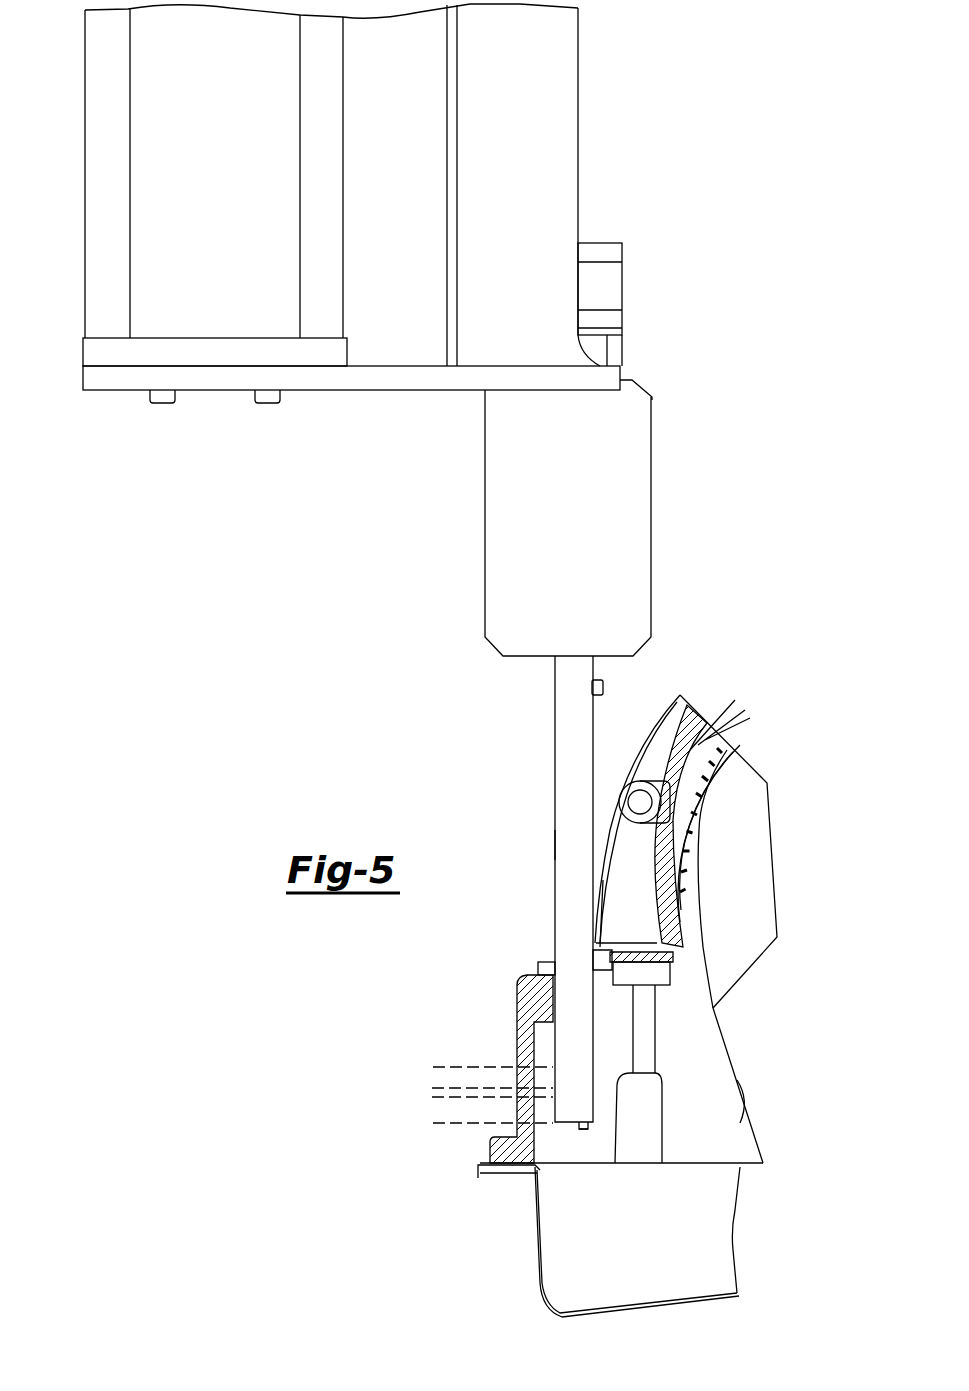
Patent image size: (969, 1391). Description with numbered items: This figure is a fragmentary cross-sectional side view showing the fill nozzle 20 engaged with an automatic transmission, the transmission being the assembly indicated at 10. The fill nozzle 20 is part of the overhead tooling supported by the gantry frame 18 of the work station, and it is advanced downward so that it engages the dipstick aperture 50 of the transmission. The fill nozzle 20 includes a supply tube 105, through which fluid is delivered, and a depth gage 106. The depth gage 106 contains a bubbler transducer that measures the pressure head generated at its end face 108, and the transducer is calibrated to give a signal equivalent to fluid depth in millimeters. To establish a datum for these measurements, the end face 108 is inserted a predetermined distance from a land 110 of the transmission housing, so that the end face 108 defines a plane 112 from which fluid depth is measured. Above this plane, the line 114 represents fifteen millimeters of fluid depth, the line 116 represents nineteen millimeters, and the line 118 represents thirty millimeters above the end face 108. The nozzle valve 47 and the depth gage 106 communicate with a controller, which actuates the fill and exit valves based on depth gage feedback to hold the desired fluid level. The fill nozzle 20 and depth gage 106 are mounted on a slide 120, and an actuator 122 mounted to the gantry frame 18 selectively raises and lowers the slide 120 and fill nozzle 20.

The cylinder head 10 is at (741, 725).
The gantry frame 18 is at (589, 250).
The fill nozzle 20 is at (692, 534).
The nozzle valve 47 is at (556, 845).
The dipstick aperture 50 is at (607, 947).
The supply tube 105 is at (583, 1130).
The depth gage 106 is at (557, 728).
The end face 108 is at (570, 1130).
The land 110 is at (547, 961).
The plane 112 is at (440, 1123).
The line 114 is at (433, 1097).
The line 116 is at (433, 1088).
The line 118 is at (442, 1067).
The slide 120 is at (613, 355).
The actuator 122 is at (150, 289).